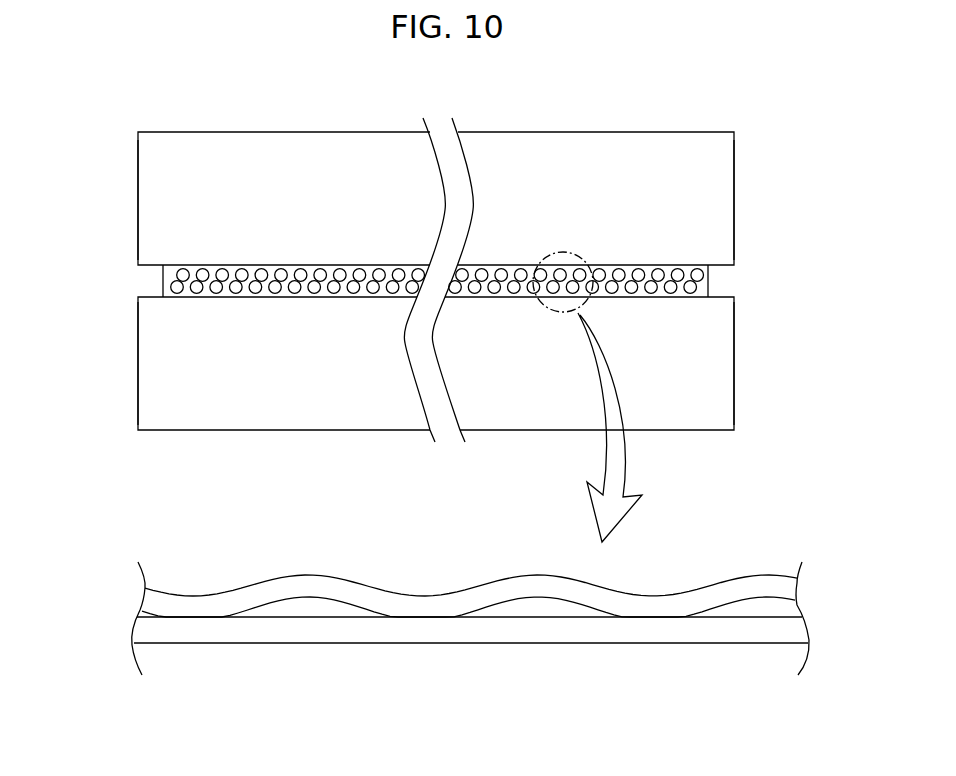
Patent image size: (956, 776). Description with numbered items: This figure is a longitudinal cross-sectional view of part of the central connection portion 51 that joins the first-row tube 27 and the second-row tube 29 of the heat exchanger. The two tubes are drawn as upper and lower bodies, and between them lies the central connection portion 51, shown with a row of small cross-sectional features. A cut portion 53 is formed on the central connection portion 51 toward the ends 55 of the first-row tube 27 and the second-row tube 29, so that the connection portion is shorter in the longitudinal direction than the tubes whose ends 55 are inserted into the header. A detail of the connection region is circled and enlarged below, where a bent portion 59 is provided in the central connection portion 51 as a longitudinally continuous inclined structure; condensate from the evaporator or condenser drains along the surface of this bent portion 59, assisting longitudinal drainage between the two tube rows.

The first-row tube 27 is at (253, 139).
The second-row tube 29 is at (307, 388).
The central connection portion 51 is at (618, 270).
The cut portion 53 is at (140, 285).
The ends 55 is at (137, 197).
The bent portion 59 is at (706, 570).